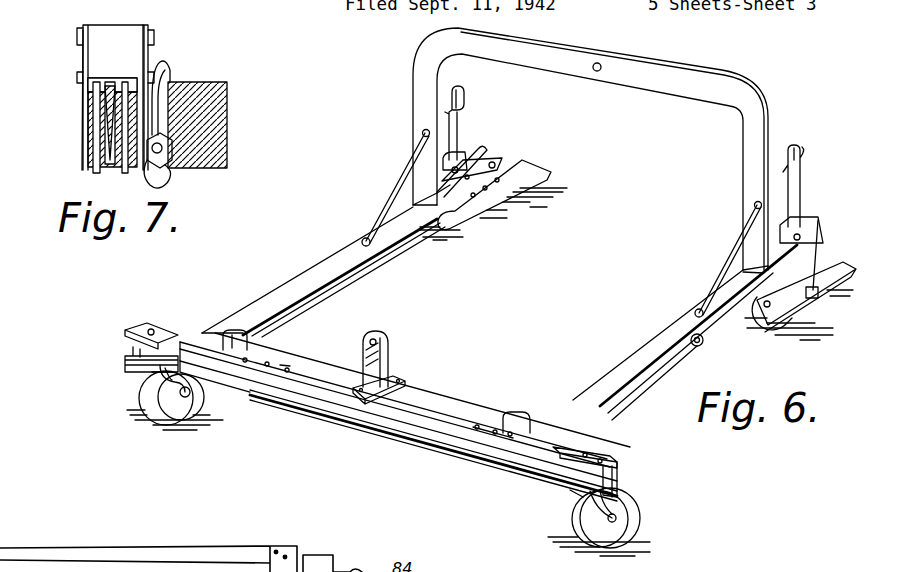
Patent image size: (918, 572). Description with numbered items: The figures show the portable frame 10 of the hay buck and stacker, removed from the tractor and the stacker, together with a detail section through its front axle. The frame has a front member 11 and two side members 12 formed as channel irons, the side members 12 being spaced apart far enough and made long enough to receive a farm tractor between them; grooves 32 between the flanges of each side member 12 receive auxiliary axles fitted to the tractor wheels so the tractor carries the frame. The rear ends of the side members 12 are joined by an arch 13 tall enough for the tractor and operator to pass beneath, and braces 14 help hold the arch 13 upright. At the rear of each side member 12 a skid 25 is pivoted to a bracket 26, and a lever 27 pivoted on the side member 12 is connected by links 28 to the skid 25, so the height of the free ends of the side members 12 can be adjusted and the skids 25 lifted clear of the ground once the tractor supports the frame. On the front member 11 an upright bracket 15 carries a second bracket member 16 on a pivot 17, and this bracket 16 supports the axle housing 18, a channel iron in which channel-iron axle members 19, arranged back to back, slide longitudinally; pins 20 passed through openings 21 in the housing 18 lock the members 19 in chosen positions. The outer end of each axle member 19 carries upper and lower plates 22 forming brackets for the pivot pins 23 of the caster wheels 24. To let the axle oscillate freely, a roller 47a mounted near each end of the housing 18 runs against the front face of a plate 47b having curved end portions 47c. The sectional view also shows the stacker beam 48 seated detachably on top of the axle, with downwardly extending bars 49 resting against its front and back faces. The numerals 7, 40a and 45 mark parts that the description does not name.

In FIG. 6, the hole 7 is at (508, 435).
In FIG. 6, the portable frame 10 is at (312, 362).
In FIG. 7, the front member 11 is at (222, 125).
In FIG. 6, the front member 11 is at (427, 392).
In FIG. 6, the side members 12 is at (333, 262).
In FIG. 6, the arch 13 is at (757, 108).
In FIG. 6, the braces 14 is at (395, 192).
In FIG. 6, the upright bracket 15 is at (389, 345).
In FIG. 6, the bracket member 16 is at (366, 368).
In FIG. 6, the pivot 17 is at (380, 333).
In FIG. 7, the axle housing 18 is at (164, 176).
In FIG. 6, the axle housing 18 is at (453, 420).
In FIG. 7, the axle members 19 is at (110, 130).
In FIG. 6, the axle members 19 is at (230, 370).
In FIG. 6, the pins 20 is at (283, 352).
In FIG. 6, the openings 21 is at (233, 330).
In FIG. 6, the upper and lower plates 22 is at (598, 453).
In FIG. 6, the pivot pins 23 is at (153, 330).
In FIG. 6, the caster wheels 24 is at (150, 388).
In FIG. 6, the skids 25 is at (520, 178).
In FIG. 6, the bracket 26 is at (767, 312).
In FIG. 6, the lever 27 is at (797, 200).
In FIG. 6, the links 28 is at (818, 262).
In FIG. 6, the grooves 32 is at (483, 173).
In FIG. 6, the pivot 40a is at (677, 362).
In FIG. 6, the plate 45 is at (483, 173).
In FIG. 7, the roller 47a is at (170, 80).
In FIG. 7, the plate 47b is at (168, 166).
In FIG. 7, the curved end portions 47c is at (165, 62).
In FIG. 6, the curved end portions 47c is at (240, 332).
In FIG. 7, the beam 48 is at (107, 50).
In FIG. 7, the bars 49 is at (148, 63).